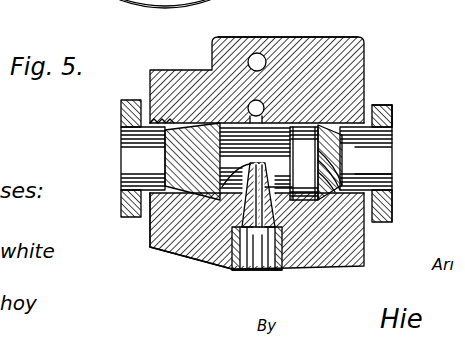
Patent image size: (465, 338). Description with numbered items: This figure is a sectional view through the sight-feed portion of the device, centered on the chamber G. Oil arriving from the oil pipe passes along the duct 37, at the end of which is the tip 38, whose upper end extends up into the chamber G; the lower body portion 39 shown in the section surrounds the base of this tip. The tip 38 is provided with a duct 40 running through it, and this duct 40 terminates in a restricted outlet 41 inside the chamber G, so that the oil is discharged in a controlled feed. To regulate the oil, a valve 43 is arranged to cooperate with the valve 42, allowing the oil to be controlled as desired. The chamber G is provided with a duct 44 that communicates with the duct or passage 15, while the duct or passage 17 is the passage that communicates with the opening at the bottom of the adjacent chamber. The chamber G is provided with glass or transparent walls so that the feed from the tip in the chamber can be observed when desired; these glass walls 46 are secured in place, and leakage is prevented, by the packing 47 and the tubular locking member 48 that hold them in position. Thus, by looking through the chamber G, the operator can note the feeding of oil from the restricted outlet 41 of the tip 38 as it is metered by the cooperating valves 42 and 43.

The duct or passage 15 is at (311, 68).
The duct or passage 17 is at (273, 36).
The duct 37 is at (268, 270).
The tip 38 is at (186, 257).
The body lower portion 39 is at (152, 222).
The duct 40 is at (273, 226).
The restricted outlet 41 is at (380, 176).
The valve 42 is at (283, 218).
The valve 43 is at (248, 270).
The duct 44 is at (264, 103).
The glass walls 46 is at (121, 154).
The packing 47 is at (175, 120).
The tubular locking member 48 is at (121, 116).
The chamber G is at (392, 139).